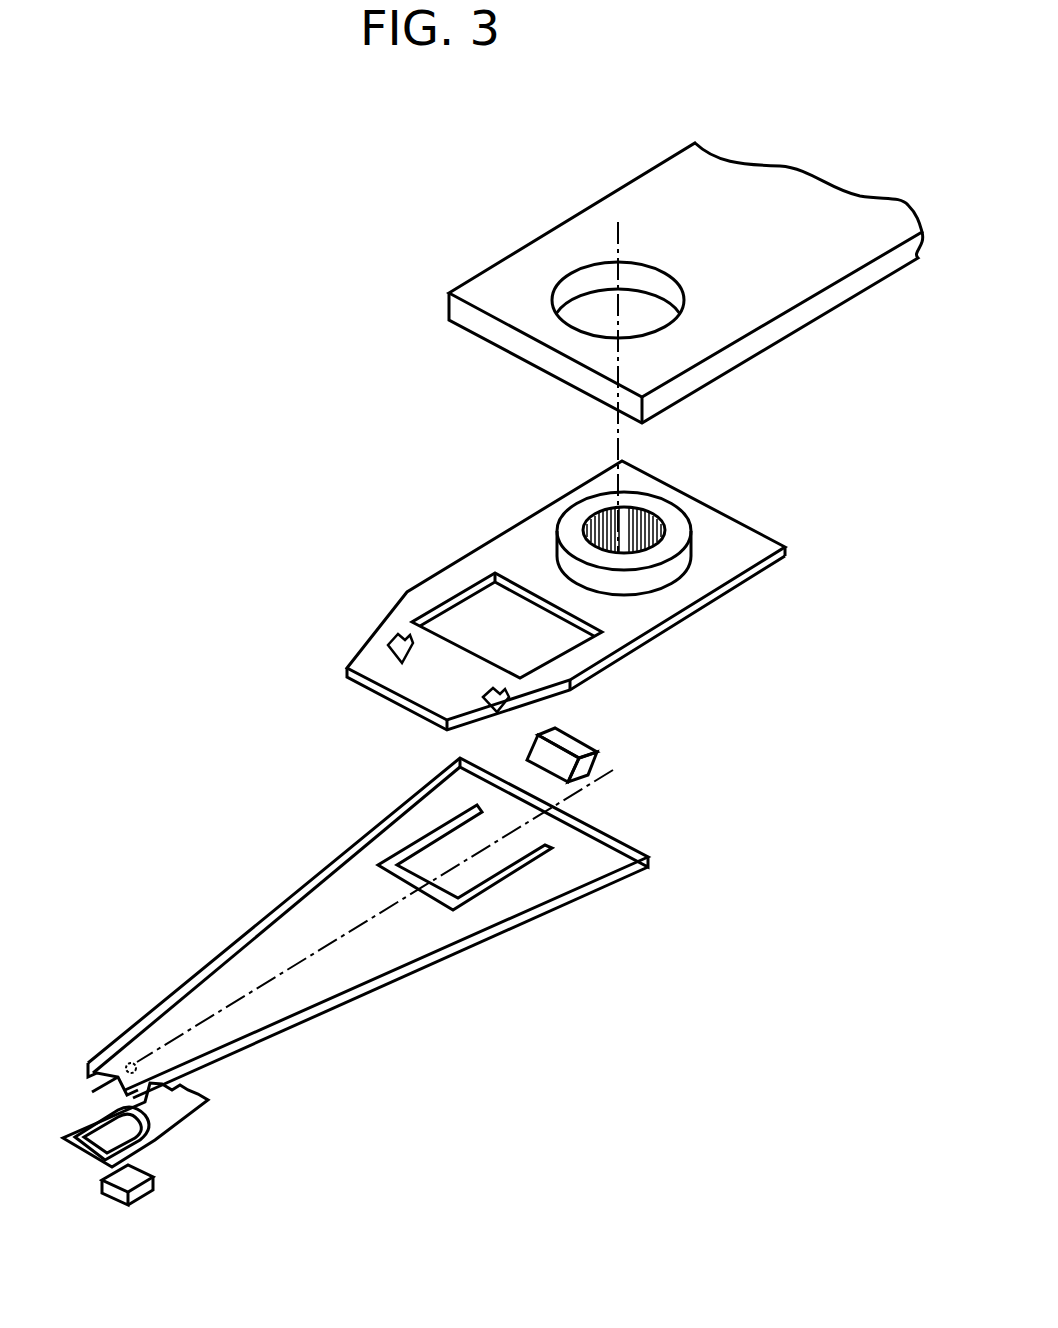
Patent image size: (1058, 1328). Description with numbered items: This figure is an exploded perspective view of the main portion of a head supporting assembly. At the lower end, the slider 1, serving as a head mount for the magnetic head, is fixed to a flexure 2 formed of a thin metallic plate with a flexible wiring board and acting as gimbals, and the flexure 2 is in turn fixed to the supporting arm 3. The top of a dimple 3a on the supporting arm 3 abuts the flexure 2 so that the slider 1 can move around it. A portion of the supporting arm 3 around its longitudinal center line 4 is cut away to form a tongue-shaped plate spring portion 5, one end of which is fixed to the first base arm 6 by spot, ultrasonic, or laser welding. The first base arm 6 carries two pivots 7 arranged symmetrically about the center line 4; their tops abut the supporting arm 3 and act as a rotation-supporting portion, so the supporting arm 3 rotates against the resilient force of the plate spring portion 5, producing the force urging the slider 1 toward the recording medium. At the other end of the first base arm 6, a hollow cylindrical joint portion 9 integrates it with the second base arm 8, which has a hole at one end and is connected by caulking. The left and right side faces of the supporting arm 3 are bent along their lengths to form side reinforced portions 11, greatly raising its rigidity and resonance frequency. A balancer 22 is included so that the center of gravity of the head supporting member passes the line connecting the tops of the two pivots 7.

The slider 1 is at (130, 1183).
The flexure 2 is at (158, 1103).
The supporting arm 3 is at (215, 983).
The dimple 3a is at (128, 1063).
The center line 4 is at (300, 962).
The plate spring portion 5 is at (447, 848).
The first base arm 6 is at (520, 538).
The pivots 7 is at (483, 698).
The second base arm 8 is at (531, 268).
The joint portion 9 is at (610, 582).
The side reinforced portions 11 is at (433, 955).
The balancer 22 is at (580, 742).